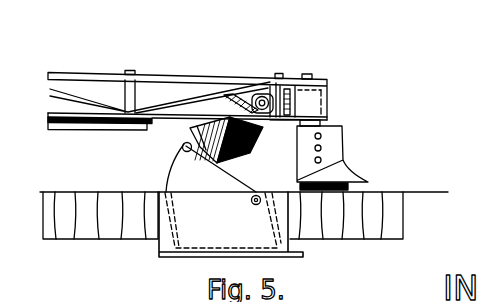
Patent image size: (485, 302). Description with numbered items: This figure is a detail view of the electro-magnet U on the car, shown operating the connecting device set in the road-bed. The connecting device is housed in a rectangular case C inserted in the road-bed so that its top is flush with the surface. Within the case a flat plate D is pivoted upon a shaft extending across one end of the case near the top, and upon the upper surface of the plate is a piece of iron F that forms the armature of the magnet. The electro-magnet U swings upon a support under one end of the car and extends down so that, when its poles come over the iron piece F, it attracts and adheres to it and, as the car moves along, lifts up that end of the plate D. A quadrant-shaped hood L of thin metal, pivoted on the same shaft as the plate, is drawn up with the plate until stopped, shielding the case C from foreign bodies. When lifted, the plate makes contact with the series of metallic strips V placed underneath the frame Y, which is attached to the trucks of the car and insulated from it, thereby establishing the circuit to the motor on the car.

The frame Y is at (187, 85).
The metallic strips V is at (100, 132).
The piece of iron F is at (183, 144).
The quadrant-shaped hood L is at (179, 168).
The flat plate D is at (221, 169).
The electro-magnet U is at (250, 143).
The rectangular case C is at (231, 224).